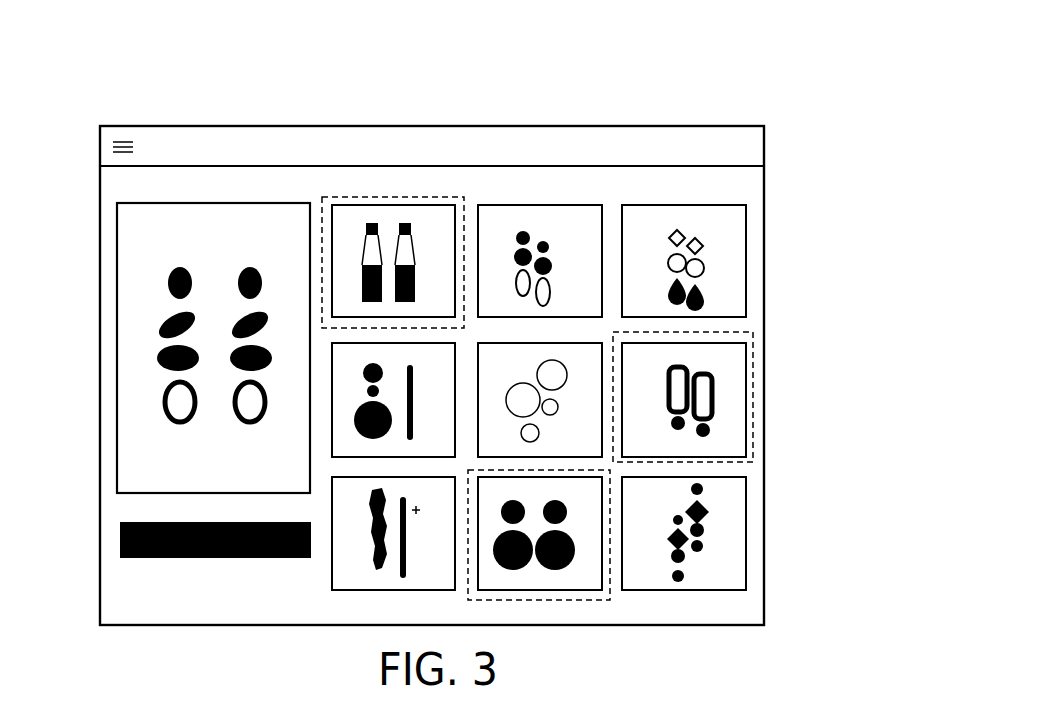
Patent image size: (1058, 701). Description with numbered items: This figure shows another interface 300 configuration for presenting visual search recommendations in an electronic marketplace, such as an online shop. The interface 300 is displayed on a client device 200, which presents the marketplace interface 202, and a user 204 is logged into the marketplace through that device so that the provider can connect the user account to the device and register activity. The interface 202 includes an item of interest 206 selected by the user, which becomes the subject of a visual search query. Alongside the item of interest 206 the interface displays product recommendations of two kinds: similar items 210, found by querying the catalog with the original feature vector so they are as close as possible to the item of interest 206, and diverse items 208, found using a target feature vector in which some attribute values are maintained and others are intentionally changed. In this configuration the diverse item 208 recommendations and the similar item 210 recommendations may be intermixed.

The interface 300 is at (824, 88).
The client device 200 is at (764, 188).
The interface 202 is at (753, 227).
The user 204 is at (755, 152).
The item of interest 206 is at (117, 263).
The diverse items 208 is at (753, 402).
The similar items 210 is at (745, 527).